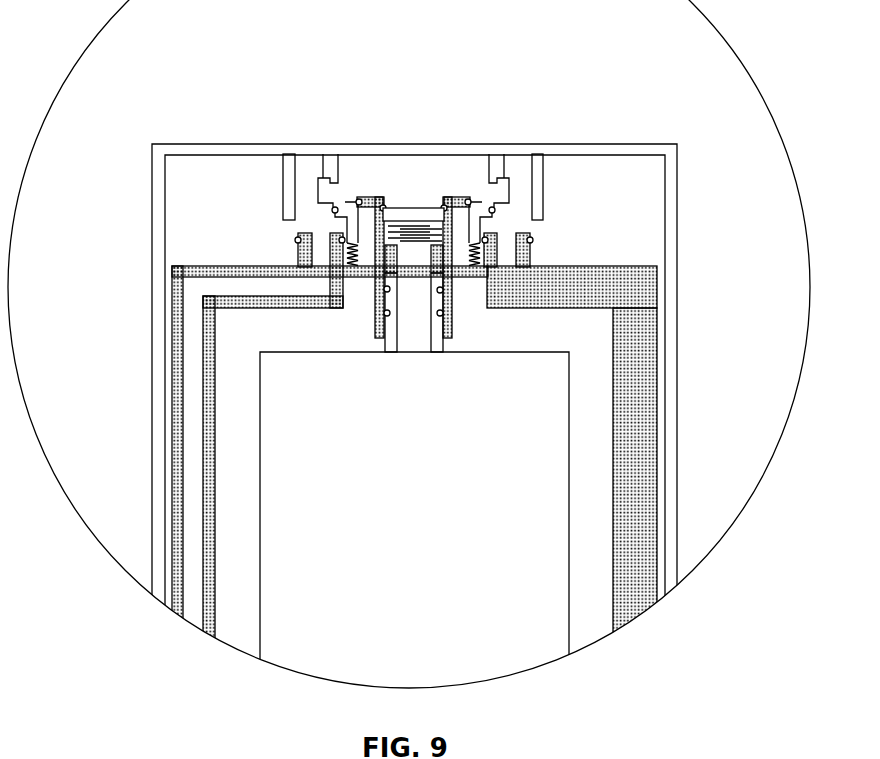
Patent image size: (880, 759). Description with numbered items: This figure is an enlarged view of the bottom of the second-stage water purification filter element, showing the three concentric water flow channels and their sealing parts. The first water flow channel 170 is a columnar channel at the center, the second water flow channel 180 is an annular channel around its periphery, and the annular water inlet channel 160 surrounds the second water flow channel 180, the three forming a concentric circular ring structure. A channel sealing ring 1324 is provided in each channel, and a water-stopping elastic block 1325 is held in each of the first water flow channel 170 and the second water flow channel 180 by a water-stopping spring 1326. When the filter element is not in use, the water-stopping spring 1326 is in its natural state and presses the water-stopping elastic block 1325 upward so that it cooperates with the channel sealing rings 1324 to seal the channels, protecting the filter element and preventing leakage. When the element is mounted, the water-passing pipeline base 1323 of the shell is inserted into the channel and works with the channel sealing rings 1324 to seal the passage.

The annular water inlet channel 160 is at (295, 240).
The first water flow channel 170 is at (411, 258).
The second water flow channel 180 is at (472, 245).
The water-passing pipeline base 1323 is at (440, 153).
The channel sealing ring 1324 is at (533, 240).
The water-stopping elastic block 1325 is at (413, 208).
The water-stopping spring 1326 is at (402, 242).